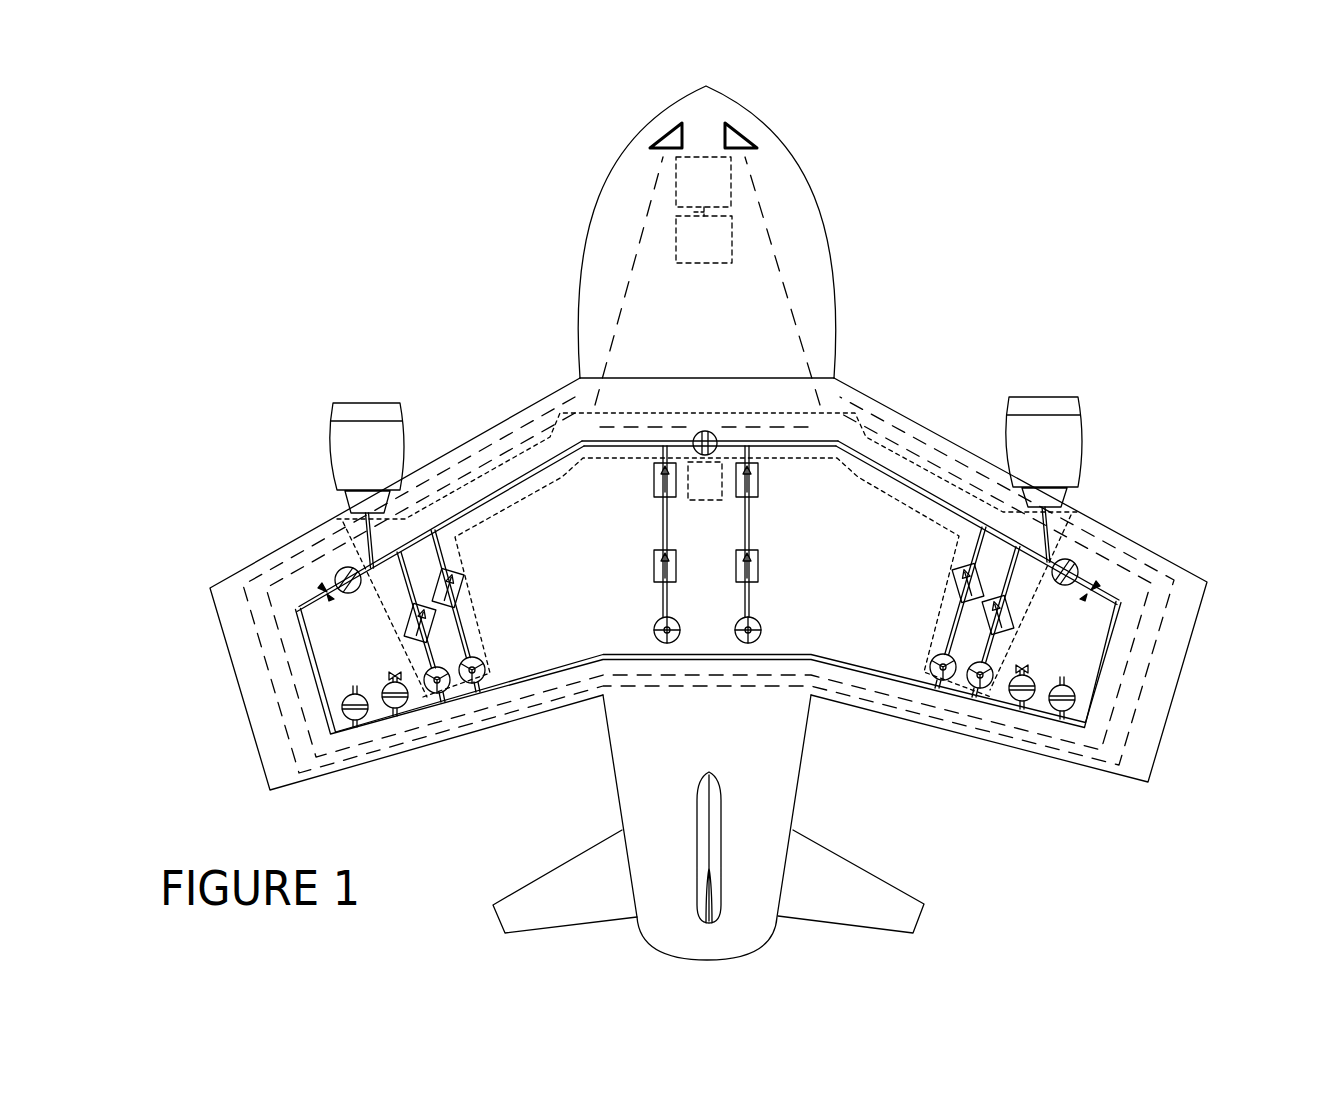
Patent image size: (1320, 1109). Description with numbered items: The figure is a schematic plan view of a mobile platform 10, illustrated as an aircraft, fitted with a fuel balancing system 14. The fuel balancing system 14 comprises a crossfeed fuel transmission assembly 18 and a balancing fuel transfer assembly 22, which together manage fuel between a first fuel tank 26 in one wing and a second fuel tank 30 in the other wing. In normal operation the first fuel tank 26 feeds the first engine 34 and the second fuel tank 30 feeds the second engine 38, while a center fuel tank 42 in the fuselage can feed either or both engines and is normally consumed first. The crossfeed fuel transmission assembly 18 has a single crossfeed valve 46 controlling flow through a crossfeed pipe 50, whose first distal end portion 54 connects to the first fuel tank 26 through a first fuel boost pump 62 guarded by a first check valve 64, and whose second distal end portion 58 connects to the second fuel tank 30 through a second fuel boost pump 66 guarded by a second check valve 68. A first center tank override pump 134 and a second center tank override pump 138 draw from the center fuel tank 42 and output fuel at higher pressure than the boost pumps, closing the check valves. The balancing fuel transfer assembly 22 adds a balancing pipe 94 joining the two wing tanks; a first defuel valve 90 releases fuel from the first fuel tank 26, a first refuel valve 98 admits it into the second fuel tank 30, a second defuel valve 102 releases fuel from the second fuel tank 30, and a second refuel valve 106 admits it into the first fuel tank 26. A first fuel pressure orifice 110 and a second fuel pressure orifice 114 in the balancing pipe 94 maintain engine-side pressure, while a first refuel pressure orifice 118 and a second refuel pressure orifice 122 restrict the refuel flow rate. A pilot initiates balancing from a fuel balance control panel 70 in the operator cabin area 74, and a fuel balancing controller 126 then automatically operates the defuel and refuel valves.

The mobile platform 10 is at (597, 200).
The fuel balancing system 14 is at (798, 330).
The crossfeed fuel transmission assembly 18 is at (838, 423).
The balancing fuel transfer assembly 22 is at (547, 448).
The first fuel tank 26 is at (286, 546).
The second fuel tank 30 is at (1120, 535).
The first engine 34 is at (332, 422).
The second engine 38 is at (1080, 402).
The center fuel tank 42 is at (548, 398).
The crossfeed valve 46 is at (718, 443).
The crossfeed pipe 50 is at (620, 425).
The first distal end portion 54 is at (420, 535).
The second distal end portion 58 is at (997, 535).
The first fuel boost pump 62 is at (447, 693).
The first check valve 64 is at (462, 592).
The second fuel boost pump 66 is at (947, 676).
The second check valve 68 is at (983, 620).
The fuel balance control panel 70 is at (732, 175).
The mobile platform operator cabin area 74 is at (667, 183).
The first defuel valve 90 is at (338, 568).
The balancing pipe 94 is at (302, 630).
The first refuel valve 98 is at (1027, 702).
The second defuel valve 102 is at (1077, 562).
The second refuel valve 106 is at (380, 716).
The first fuel pressure orifice 110 is at (325, 590).
The second fuel pressure orifice 114 is at (1093, 588).
The first refuel pressure orifice 118 is at (393, 672).
The second refuel pressure orifice 122 is at (1040, 670).
The fuel balancing controller 126 is at (733, 228).
The first center tank override pump 134 is at (676, 642).
The second center tank override pump 138 is at (760, 643).